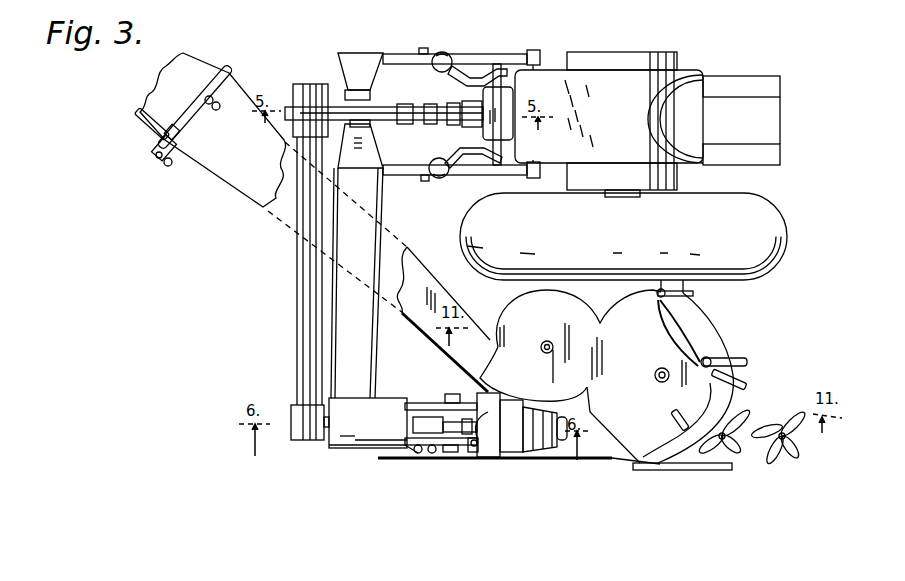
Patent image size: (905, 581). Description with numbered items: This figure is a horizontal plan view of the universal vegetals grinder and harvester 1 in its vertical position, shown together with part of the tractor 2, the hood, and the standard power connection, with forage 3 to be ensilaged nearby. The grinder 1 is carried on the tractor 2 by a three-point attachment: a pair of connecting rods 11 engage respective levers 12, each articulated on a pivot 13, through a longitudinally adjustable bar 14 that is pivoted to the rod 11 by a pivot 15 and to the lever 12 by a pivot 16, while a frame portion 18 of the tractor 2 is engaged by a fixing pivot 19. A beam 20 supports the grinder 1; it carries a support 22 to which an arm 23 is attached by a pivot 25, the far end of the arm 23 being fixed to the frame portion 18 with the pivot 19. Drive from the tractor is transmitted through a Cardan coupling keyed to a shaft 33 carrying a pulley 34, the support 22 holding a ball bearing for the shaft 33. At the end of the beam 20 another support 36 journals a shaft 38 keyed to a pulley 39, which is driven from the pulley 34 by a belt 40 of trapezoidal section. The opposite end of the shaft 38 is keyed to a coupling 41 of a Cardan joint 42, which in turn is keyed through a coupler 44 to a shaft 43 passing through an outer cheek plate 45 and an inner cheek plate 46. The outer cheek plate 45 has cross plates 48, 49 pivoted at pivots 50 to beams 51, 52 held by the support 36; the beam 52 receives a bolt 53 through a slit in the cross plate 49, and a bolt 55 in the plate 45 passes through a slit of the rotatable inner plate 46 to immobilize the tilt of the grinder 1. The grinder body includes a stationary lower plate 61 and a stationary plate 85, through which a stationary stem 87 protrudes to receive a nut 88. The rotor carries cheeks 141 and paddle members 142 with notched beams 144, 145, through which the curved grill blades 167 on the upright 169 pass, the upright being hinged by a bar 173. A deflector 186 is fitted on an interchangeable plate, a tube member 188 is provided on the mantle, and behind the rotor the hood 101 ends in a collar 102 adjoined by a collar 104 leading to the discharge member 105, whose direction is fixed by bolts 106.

The universal vegetals grinder and harvester 1 is at (714, 301).
The tractor 2 is at (794, 148).
The forage 3 is at (750, 421).
The connecting rods 11 is at (497, 64).
The levers 12 is at (387, 54).
The pivot 13 is at (534, 54).
The longitudinally adjustable bar 14 is at (447, 57).
The pivot 15 is at (478, 80).
The pivot 16 is at (432, 52).
The frame portion 18 is at (462, 107).
The fixing pivot 19 is at (460, 125).
The beam 20 is at (373, 362).
The support 22 is at (360, 152).
The arm 23 is at (378, 107).
The pivot 25 is at (359, 90).
The shaft 33 is at (330, 95).
The pulley 34 is at (292, 97).
The support 36 is at (354, 445).
The shaft 38 is at (340, 448).
The pulley 39 is at (289, 403).
The belt 40 is at (296, 277).
The coupling 41 is at (424, 416).
The Cardan joint 42 is at (412, 425).
The shaft 43 is at (488, 412).
The coupler 44 is at (467, 420).
The outer cheek plate 45 is at (494, 458).
The inner cheek plate 46 is at (505, 455).
The cross plate 48 is at (451, 319).
The cross plate 49 is at (427, 453).
The pivots 50 is at (450, 393).
The beam 51 is at (420, 407).
The beam 52 is at (358, 446).
The bolt 53 is at (412, 452).
The bolt 55 is at (470, 455).
The stationary lower plate 61 is at (598, 293).
The stationary plate 85 is at (528, 308).
The stationary stem 87 is at (548, 340).
The nut 88 is at (541, 348).
The hood 101 is at (212, 160).
The collar 102 is at (166, 158).
The collar 104 is at (165, 128).
The discharge member 105 is at (146, 102).
The bolts 106 is at (199, 90).
The cheeks 141 is at (702, 362).
The paddle members 142 is at (667, 336).
The beams 144 is at (749, 361).
The beams 145 is at (748, 385).
The blades 167 is at (713, 360).
The upright 169 is at (679, 290).
The bar 173 is at (660, 289).
The deflector 186 is at (685, 469).
The tube member 188 is at (548, 457).